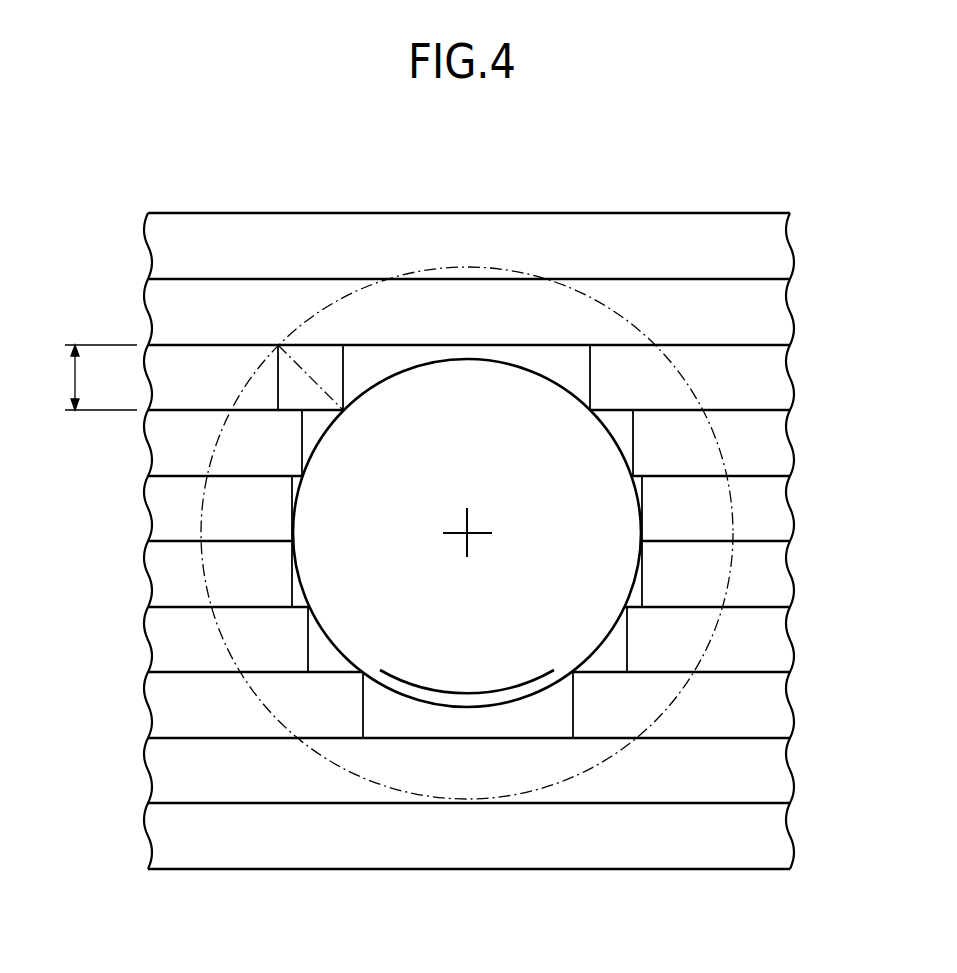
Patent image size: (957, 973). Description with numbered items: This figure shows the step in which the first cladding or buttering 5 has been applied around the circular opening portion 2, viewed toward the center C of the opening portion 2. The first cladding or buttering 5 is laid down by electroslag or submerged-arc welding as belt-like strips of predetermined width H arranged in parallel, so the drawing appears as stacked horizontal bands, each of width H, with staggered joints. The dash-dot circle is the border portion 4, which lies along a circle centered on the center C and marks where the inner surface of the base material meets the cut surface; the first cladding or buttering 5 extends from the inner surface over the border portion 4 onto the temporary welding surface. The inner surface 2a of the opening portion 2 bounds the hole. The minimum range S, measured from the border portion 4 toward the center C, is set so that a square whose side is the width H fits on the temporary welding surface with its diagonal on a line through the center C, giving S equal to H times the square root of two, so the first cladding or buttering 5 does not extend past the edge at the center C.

The first cladding or buttering 5 is at (163, 705).
The opening portion 2 is at (549, 690).
The inner surface of the opening portion 2a is at (469, 706).
The border portion 4 is at (610, 307).
The minimum range S is at (308, 373).
The center of the opening portion C is at (469, 530).
The width of the first cladding or buttering H is at (93, 377).